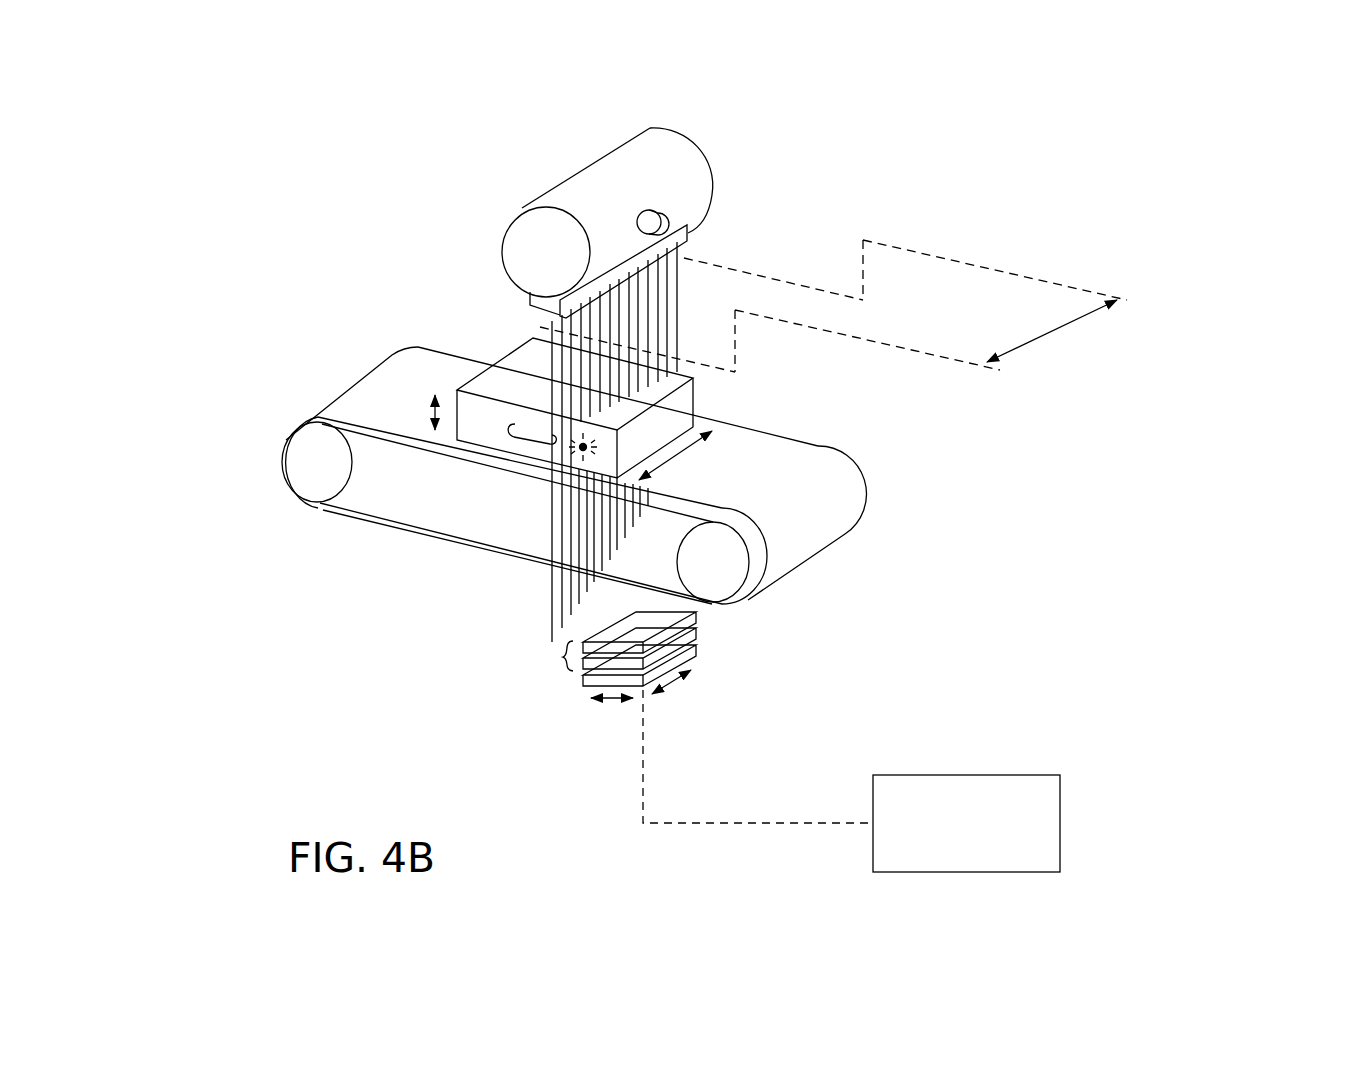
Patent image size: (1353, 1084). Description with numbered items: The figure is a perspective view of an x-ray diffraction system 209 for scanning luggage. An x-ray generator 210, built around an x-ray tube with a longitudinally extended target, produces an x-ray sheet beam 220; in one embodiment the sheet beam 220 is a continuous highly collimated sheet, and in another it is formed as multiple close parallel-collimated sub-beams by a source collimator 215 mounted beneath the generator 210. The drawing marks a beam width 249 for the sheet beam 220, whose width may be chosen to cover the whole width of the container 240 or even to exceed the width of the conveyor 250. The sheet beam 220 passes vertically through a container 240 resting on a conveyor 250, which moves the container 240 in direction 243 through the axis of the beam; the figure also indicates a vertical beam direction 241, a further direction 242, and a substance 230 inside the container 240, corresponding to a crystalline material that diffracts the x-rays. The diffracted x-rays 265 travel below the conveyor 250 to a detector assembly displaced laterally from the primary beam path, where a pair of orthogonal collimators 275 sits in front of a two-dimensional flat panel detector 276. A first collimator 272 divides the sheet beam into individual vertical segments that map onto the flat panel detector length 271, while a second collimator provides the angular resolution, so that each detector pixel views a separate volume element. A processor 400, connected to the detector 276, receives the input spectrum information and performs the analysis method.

The x-ray diffraction system 209 is at (868, 99).
The x-ray generator 210 is at (488, 227).
The source collimator 215 is at (509, 293).
The x-ray sheet beam 220 is at (700, 249).
The beam width 249 is at (1054, 333).
The beam direction 241 is at (428, 410).
The container 240 is at (699, 396).
The substance 230 is at (611, 447).
The container travel direction 242 is at (652, 470).
The conveyor 250 is at (879, 483).
The direction 243 is at (493, 450).
The diffracted x-rays 265 is at (624, 603).
The collimators 275 is at (553, 657).
The flat panel detector 276 is at (709, 637).
The flat panel detector length 271 is at (611, 704).
The first collimator 272 is at (673, 692).
The processor 400 is at (990, 838).